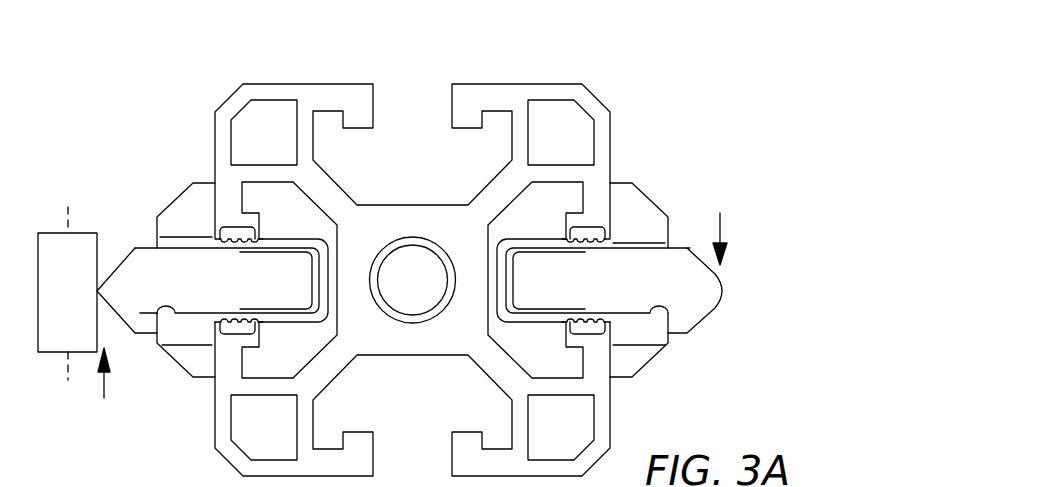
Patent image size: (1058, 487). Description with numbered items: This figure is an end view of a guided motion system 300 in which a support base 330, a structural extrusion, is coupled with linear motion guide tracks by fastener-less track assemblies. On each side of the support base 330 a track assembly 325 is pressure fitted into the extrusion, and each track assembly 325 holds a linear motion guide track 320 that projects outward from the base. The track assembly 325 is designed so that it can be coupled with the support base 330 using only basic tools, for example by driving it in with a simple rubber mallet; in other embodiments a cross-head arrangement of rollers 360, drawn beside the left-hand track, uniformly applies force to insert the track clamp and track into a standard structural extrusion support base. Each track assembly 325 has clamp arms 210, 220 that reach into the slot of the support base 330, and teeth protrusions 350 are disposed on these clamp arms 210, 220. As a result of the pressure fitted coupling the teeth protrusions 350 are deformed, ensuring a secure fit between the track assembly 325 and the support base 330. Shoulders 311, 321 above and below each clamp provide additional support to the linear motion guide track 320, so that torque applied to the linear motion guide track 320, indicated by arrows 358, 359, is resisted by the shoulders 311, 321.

The guided motion system 300 is at (690, 54).
The support base 330 is at (592, 91).
The teeth protrusions 350 is at (236, 226).
The track assembly 325 is at (646, 197).
The shoulder 311 is at (412, 227).
The shoulder 321 is at (413, 330).
The linear motion guide track 320 is at (110, 277).
The clamp arm 210 is at (237, 243).
The clamp arm 220 is at (280, 292).
The rollers 360 is at (52, 240).
The arrow 359 is at (721, 229).
The arrow 358 is at (100, 388).